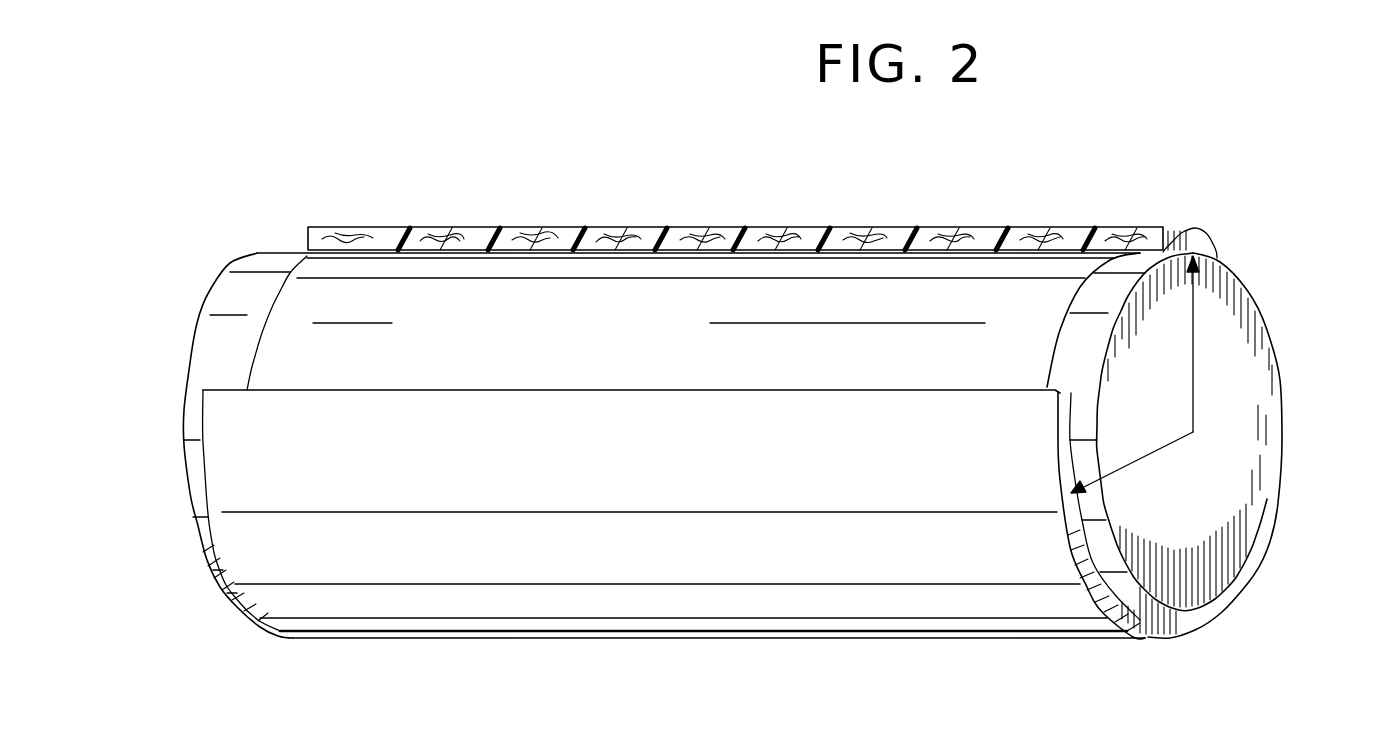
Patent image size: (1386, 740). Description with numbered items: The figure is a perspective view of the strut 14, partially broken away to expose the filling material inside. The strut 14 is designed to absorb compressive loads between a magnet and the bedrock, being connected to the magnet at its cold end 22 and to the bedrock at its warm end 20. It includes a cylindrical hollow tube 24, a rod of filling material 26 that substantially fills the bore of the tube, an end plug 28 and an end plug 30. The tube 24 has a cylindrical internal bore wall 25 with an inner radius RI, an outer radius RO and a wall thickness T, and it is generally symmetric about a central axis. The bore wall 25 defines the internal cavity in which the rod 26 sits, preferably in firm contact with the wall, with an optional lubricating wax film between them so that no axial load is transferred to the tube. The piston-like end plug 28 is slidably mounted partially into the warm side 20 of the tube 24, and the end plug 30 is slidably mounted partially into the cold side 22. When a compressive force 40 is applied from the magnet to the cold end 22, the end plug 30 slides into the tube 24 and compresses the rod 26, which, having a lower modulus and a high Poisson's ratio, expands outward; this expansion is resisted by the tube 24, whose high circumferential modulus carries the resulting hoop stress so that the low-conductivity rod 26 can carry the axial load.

The strut 14 is at (665, 638).
The warm side (end) 20 is at (200, 524).
The cold side (end) 22 is at (1139, 604).
The cylindrical hollow tube 24 is at (363, 620).
The internal bore wall 25 is at (363, 250).
The rod of filling material 26 is at (622, 324).
The end plug 28 is at (183, 402).
The end plug 30 is at (1239, 563).
The compressive force 40 is at (1196, 432).
The thickness T is at (548, 251).
The inner radius RI is at (1195, 386).
The outer radius RO is at (1138, 470).